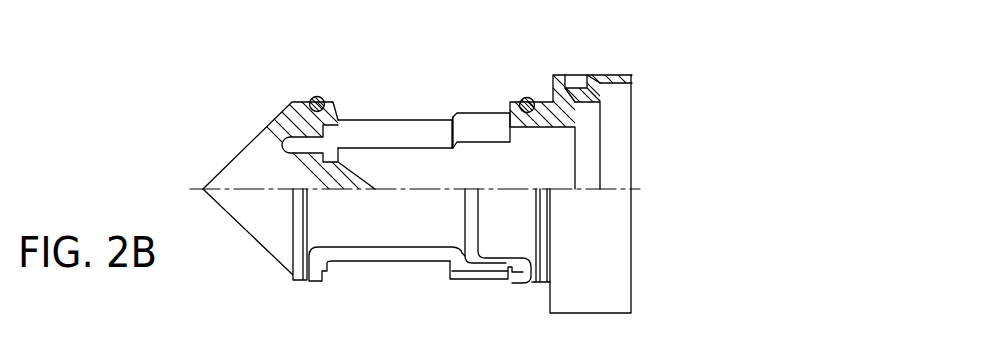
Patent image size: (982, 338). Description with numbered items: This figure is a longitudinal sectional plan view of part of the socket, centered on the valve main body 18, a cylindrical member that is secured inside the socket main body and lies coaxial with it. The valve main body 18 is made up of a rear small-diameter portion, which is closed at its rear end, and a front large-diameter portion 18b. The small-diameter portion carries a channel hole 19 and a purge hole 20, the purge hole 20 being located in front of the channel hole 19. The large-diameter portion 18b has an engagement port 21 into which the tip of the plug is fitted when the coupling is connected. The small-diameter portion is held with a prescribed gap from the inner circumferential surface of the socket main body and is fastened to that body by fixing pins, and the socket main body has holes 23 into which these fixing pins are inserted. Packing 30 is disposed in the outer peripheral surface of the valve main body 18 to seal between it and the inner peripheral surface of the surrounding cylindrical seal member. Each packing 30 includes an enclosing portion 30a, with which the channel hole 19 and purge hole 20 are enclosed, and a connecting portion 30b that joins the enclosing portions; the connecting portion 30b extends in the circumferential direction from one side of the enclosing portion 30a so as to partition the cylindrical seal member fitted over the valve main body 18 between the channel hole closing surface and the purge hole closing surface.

The valve main body 18 is at (473, 88).
The large-diameter portion 18b is at (612, 76).
The channel hole 19 is at (392, 120).
The purge hole 20 is at (493, 112).
The engagement port 21 is at (618, 131).
The holes 23 is at (577, 75).
The packing 30 is at (366, 258).
The enclosing portion 30a is at (414, 257).
The connecting portion 30b is at (471, 219).